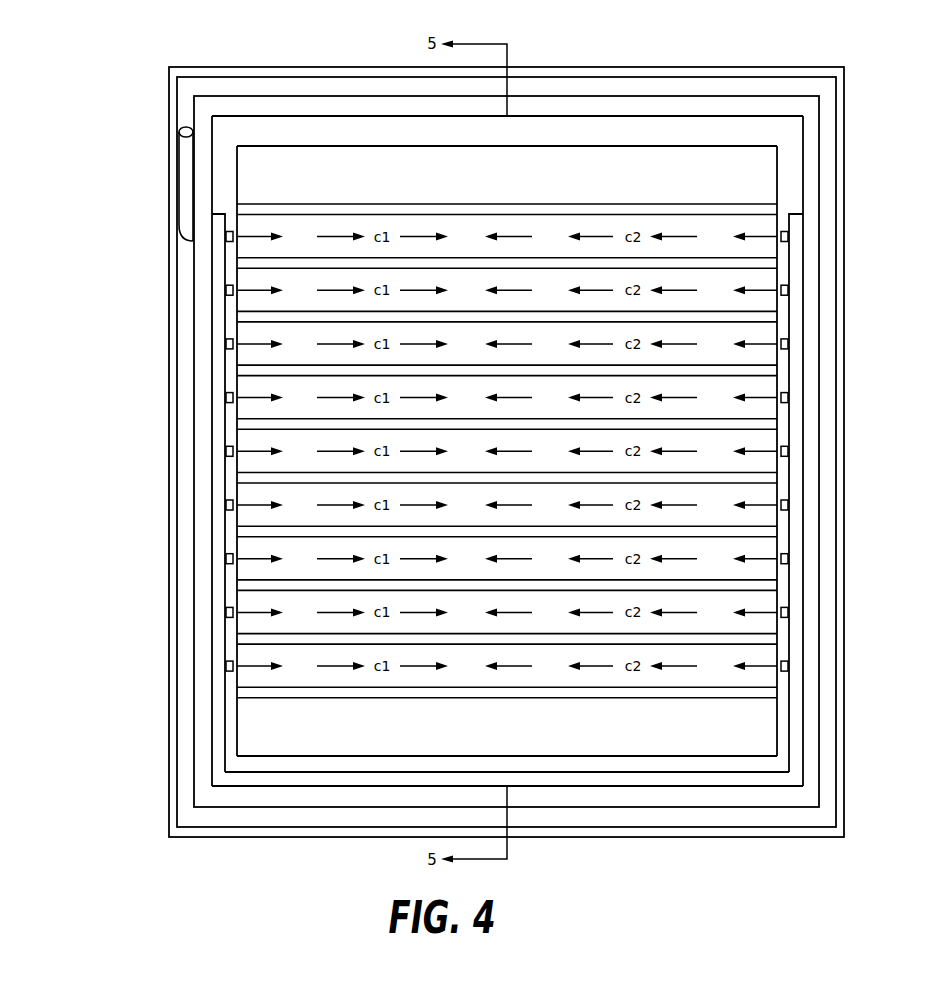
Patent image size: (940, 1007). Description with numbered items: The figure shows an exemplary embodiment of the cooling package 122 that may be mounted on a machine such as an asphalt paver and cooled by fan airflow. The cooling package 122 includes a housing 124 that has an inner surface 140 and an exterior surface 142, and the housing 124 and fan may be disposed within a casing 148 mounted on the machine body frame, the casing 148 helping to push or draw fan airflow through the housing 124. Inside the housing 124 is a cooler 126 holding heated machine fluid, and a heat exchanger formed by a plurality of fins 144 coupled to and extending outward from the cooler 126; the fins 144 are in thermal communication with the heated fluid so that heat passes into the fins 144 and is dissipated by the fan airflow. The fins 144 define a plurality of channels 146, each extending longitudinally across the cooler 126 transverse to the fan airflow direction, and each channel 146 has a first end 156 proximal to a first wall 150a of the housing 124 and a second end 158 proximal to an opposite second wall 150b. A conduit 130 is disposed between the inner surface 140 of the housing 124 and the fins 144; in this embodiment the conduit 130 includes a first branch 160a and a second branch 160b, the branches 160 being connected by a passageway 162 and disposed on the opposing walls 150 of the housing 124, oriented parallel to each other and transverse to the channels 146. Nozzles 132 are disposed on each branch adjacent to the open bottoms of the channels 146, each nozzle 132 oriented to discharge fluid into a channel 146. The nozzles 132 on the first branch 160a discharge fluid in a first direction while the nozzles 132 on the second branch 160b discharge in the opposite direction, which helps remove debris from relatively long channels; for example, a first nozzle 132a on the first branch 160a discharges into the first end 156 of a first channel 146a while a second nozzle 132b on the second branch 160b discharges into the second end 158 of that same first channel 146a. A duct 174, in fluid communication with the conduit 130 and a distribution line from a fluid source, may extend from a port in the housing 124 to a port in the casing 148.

The cooling package 122 is at (617, 87).
The housing 124 is at (275, 793).
The cooler 126 is at (547, 168).
The conduit 130 is at (219, 778).
The nozzles 132 is at (227, 288).
The first nozzle 132a is at (228, 230).
The second nozzle 132b is at (788, 235).
The inner surface 140 is at (214, 737).
The exterior surface 142 is at (193, 767).
The fins 144 is at (422, 689).
The channels 146 is at (564, 426).
The first channel 146a is at (708, 238).
The casing 148 is at (790, 832).
The walls 150 is at (504, 493).
The first wall 150a is at (213, 443).
The second wall 150b is at (802, 440).
The first end 156 is at (238, 228).
The second end 158 is at (777, 230).
The branches 160 is at (499, 451).
The first branch 160a is at (222, 587).
The second branch 160b is at (803, 723).
The passageway 162 is at (332, 777).
The duct 174 is at (185, 177).